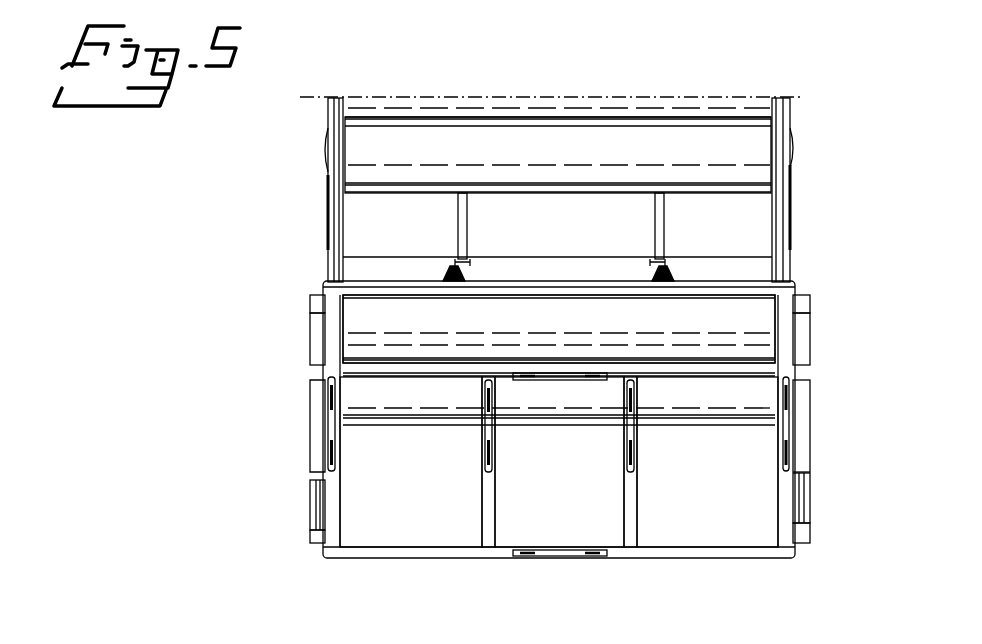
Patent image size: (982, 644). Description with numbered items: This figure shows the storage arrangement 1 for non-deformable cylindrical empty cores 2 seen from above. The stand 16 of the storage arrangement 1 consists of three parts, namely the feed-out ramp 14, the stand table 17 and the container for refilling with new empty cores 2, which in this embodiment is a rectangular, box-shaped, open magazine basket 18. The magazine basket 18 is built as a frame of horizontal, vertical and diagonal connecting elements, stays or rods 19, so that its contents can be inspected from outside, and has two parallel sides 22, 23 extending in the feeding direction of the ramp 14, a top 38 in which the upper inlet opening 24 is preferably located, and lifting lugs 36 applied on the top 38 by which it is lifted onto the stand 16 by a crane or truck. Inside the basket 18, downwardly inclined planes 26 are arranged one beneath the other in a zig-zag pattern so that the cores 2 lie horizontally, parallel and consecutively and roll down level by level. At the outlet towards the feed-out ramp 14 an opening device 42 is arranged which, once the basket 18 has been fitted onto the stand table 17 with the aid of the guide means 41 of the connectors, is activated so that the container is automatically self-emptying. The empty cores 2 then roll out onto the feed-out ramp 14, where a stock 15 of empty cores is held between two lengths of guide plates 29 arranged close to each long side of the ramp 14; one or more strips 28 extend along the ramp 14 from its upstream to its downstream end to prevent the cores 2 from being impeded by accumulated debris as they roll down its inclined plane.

The storage arrangement 1 is at (297, 215).
The empty core 2 is at (608, 140).
The feed-out ramp 14 is at (760, 220).
The stock of empty cores 15 is at (398, 95).
The stand 16 is at (290, 405).
The stand table 17 is at (800, 385).
The magazine basket 18 is at (698, 523).
The connecting rods 19 is at (483, 492).
The parallel side 22 is at (819, 472).
The parallel side 23 is at (290, 461).
The upper inlet opening 24 is at (552, 320).
The inclined planes 26 is at (362, 525).
The strip 28 is at (458, 220).
The guide plate 29 is at (778, 128).
The lifting lug 36 is at (628, 438).
The top 38 is at (535, 523).
The guide means 41 is at (312, 506).
The opening device 42 is at (445, 268).